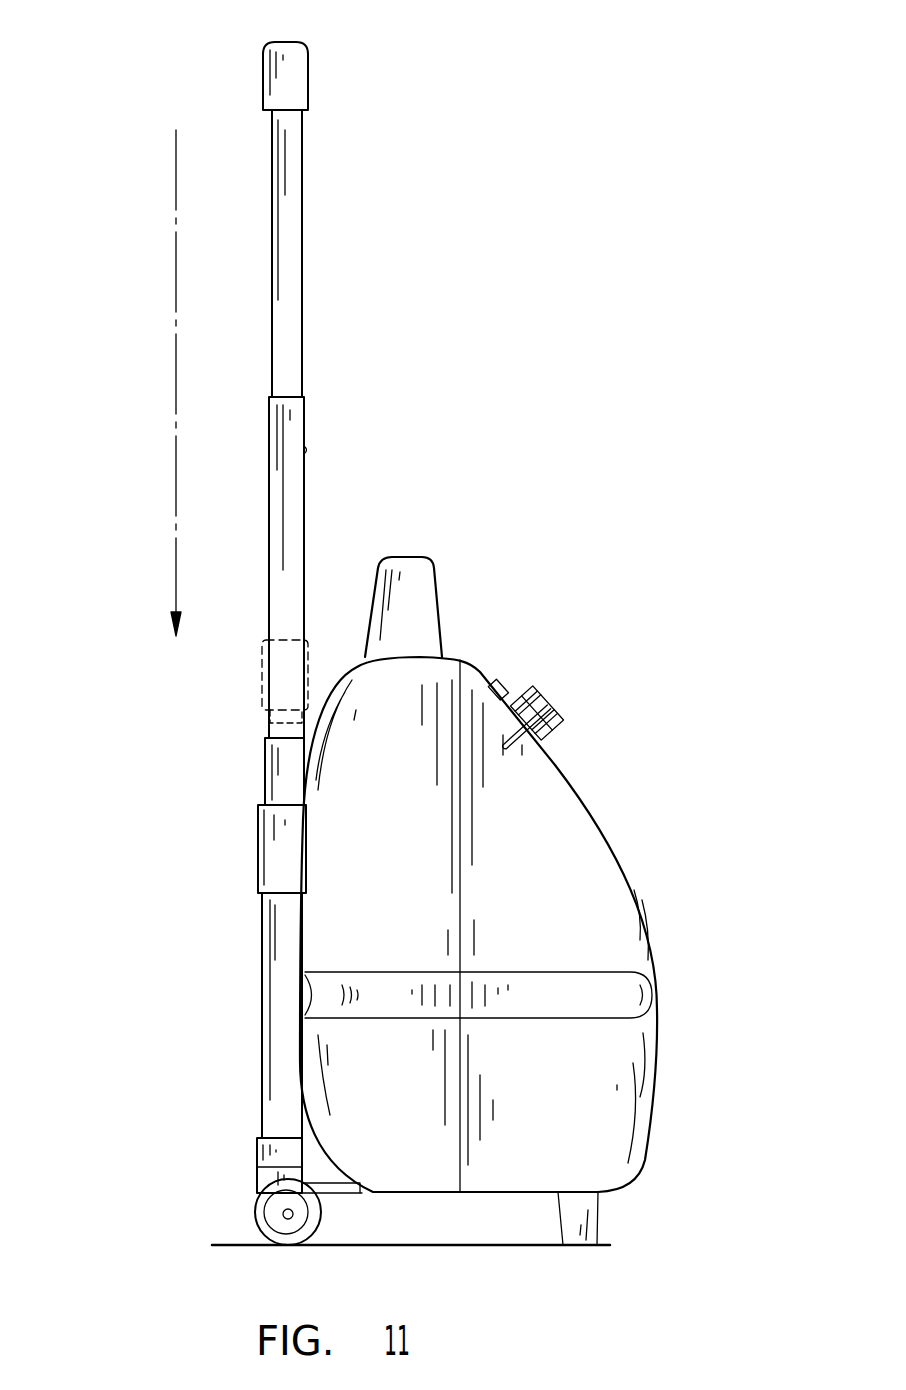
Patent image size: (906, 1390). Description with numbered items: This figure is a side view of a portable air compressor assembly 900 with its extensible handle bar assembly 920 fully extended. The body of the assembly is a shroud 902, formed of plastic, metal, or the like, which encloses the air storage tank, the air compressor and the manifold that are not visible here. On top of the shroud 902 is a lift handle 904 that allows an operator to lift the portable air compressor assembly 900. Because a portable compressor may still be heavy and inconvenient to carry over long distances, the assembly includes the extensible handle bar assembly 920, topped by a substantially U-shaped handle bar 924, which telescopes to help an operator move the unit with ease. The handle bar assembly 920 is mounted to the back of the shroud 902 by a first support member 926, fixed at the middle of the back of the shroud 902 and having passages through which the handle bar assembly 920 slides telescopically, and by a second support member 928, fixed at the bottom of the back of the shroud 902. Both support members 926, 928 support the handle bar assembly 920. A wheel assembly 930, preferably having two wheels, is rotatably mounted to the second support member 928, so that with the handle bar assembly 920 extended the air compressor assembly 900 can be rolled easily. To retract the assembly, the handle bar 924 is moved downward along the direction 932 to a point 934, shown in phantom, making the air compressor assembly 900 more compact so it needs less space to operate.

The portable air compressor assembly 900 is at (585, 668).
The shroud 902 is at (605, 857).
The lift handle 904 is at (415, 560).
The extensible handle bar assembly 920 is at (323, 376).
The handle bar 924 is at (293, 42).
The first support member 926 is at (271, 846).
The second support member 928 is at (263, 1180).
The wheel assembly 930 is at (255, 1217).
The direction 932 is at (123, 383).
The point 934 is at (267, 694).